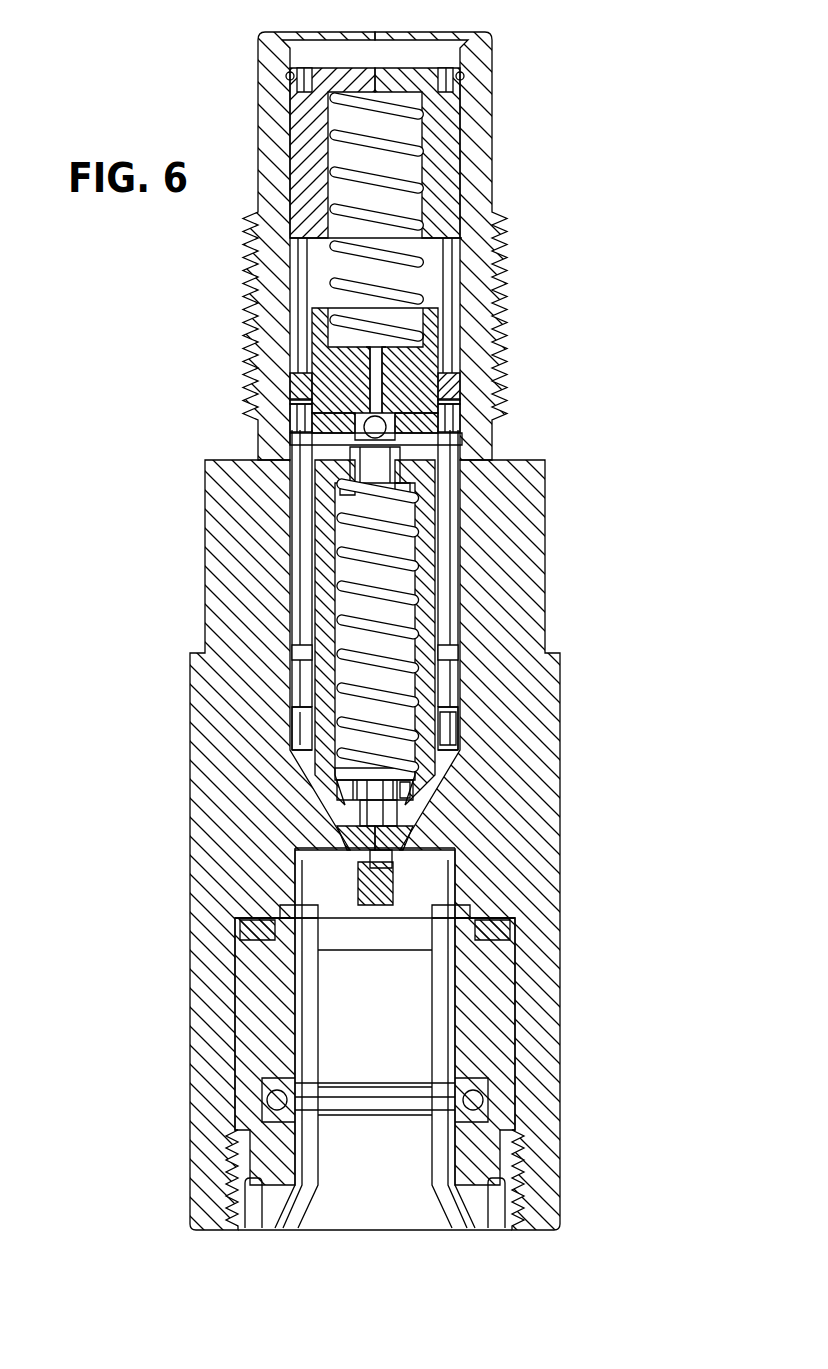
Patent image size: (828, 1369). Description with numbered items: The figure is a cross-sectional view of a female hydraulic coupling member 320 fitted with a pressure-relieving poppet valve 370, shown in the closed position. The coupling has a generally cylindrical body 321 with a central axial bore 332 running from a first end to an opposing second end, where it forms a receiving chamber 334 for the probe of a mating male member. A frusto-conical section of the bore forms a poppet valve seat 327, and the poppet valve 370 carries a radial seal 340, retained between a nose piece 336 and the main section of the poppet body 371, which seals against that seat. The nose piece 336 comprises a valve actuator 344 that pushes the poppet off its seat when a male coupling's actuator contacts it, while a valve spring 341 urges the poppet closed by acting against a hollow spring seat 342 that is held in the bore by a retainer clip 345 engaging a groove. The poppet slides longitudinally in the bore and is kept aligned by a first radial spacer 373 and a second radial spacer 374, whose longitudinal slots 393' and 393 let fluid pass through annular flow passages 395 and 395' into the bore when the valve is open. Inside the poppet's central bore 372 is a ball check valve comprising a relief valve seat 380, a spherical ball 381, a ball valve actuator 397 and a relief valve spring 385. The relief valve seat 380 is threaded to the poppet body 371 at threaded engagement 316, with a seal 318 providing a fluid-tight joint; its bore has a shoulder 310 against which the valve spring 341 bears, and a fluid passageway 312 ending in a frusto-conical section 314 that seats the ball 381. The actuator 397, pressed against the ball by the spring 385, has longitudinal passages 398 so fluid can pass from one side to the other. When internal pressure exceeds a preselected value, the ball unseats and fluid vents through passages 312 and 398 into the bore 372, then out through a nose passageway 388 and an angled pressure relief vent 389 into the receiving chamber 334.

The female hydraulic coupling member 320 is at (237, 98).
The retainer clip 345 is at (462, 78).
The hollow spring seat 342 is at (462, 165).
The valve spring 341 is at (462, 195).
The central axial bore 332 is at (455, 280).
The shoulder 310 is at (335, 328).
The relief valve seat 380 is at (430, 330).
The fluid passageway 312 is at (385, 365).
The spherical ball 381 is at (430, 405).
The longitudinal slots 393' is at (493, 425).
The seal 318 is at (300, 378).
The first radial spacer 373 is at (300, 401).
The threaded engagement 316 is at (300, 418).
The frusto-conical section 314 is at (315, 440).
The ball valve actuator 397 is at (400, 458).
The body 321 is at (215, 565).
The annular flow passage 395 is at (474, 590).
The annular flow passage 395' is at (275, 728).
The longitudinal slots 393 is at (375, 644).
The second radial spacer 374 is at (452, 710).
The relief valve spring 385 is at (425, 567).
The longitudinal passages 398 is at (350, 483).
The central bore 372 is at (410, 675).
The poppet valve 370 is at (345, 800).
The poppet body 371 is at (405, 785).
The nose passageway 388 is at (372, 815).
The poppet valve seat 327 is at (353, 838).
The radial seal 340 is at (400, 830).
The pressure relief vent 389 is at (395, 855).
The valve actuator 344 is at (385, 885).
The nose piece 336 is at (303, 855).
The receiving chamber 334 is at (348, 1019).